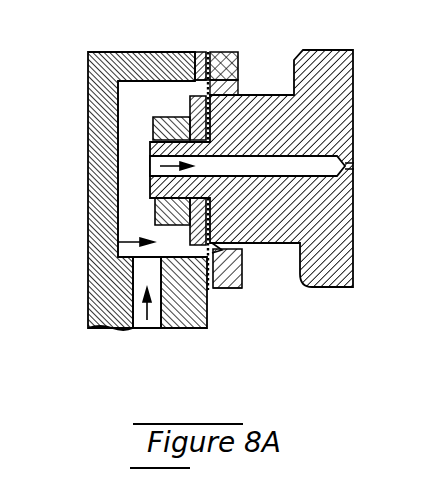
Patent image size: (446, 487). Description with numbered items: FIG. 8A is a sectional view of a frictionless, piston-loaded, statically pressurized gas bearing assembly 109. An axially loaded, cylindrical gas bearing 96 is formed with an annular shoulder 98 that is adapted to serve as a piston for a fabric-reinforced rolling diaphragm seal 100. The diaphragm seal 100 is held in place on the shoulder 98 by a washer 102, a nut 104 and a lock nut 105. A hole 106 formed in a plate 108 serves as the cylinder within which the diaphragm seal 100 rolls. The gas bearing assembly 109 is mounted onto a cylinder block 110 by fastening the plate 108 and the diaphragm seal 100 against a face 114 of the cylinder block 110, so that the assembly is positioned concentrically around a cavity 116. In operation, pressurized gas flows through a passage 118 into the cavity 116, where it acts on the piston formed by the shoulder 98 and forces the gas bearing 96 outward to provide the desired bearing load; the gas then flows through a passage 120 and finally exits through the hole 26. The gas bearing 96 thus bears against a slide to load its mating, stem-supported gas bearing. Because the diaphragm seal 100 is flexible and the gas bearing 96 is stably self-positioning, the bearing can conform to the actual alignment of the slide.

The hole 26 is at (349, 166).
The gas bearing 96 is at (320, 50).
The annular shoulder 98 is at (212, 217).
The rolling diaphragm seal 100 is at (244, 45).
The washer 102 is at (193, 53).
The nut 104 is at (182, 117).
The lock nut 105 is at (153, 127).
The hole 106 is at (242, 249).
The plate 108 is at (229, 290).
The gas bearing assembly 109 is at (301, 326).
The cylinder block 110 is at (88, 310).
The face 114 is at (211, 318).
The cavity 116 is at (118, 242).
The passage 118 is at (147, 328).
The passage 120 is at (156, 168).